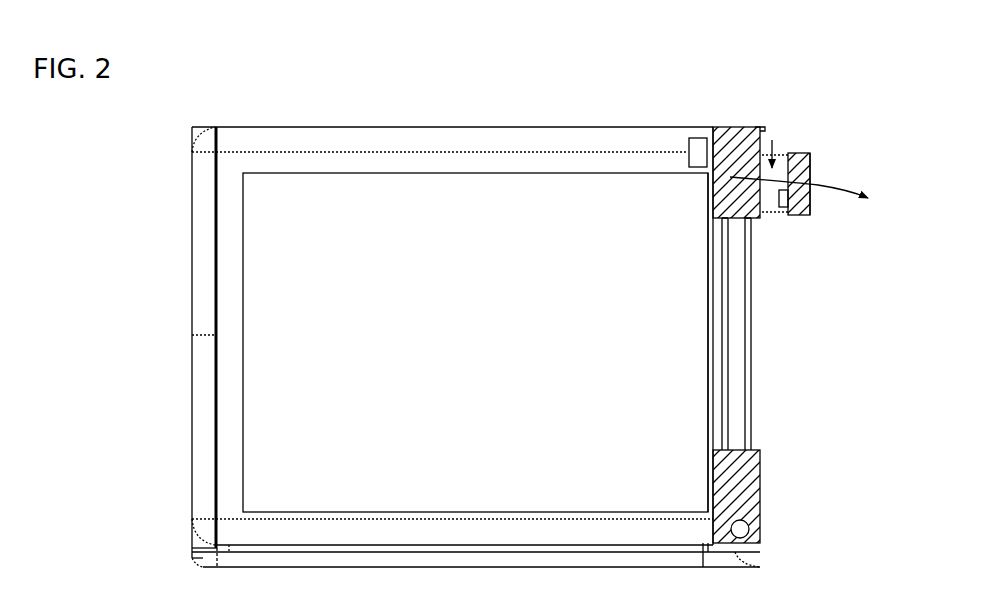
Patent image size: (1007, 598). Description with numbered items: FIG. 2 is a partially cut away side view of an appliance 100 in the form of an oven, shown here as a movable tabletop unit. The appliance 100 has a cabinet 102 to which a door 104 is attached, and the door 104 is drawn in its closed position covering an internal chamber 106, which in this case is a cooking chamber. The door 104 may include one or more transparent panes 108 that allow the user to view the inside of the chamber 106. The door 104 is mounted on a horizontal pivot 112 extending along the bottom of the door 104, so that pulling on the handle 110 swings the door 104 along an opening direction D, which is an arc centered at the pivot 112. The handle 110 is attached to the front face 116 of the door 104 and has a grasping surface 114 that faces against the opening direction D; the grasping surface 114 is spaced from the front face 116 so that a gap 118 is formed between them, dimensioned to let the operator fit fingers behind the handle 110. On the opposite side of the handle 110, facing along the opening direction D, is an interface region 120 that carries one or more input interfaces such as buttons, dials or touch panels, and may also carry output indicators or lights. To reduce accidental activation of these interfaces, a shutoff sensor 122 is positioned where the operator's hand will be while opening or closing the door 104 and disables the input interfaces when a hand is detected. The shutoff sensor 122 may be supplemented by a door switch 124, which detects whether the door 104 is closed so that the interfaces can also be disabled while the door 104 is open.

The appliance 100 is at (158, 194).
The cabinet 102 is at (253, 127).
The door 104 is at (740, 127).
The internal chamber 106 is at (374, 208).
The transparent pane 108 is at (749, 364).
The handle 110 is at (800, 153).
The horizontal pivot 112 is at (748, 528).
The grasping surface 114 is at (780, 173).
The front face 116 is at (765, 215).
The gap 118 is at (772, 140).
The interface region 120 is at (810, 172).
The shutoff sensor 122 is at (783, 210).
The door switch 124 is at (695, 138).
The opening direction D is at (811, 199).